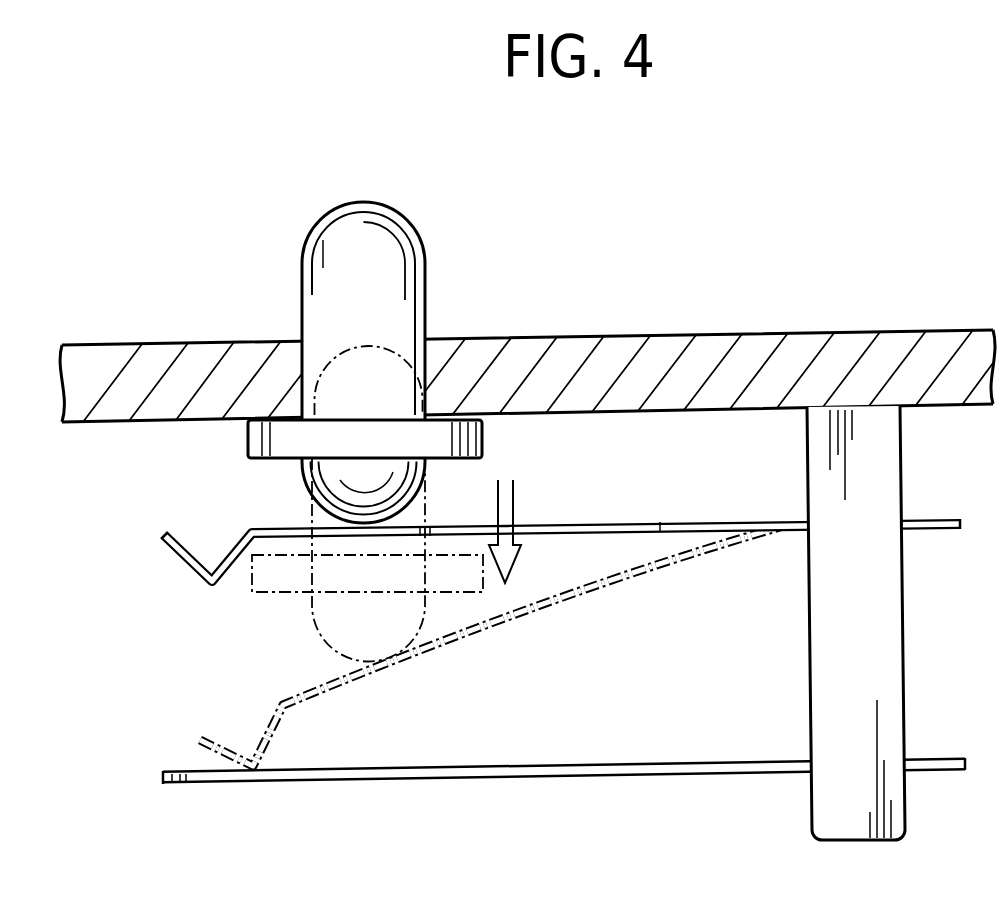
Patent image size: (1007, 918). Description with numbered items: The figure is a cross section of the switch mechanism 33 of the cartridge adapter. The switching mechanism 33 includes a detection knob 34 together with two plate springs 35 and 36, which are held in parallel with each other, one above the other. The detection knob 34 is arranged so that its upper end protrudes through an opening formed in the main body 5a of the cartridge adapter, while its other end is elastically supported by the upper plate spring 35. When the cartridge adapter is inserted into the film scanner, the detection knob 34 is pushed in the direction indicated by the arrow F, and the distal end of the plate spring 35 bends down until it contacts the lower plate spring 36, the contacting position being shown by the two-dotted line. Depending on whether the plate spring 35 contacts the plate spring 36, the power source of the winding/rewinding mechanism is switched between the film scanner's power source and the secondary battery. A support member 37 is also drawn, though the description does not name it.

The switch mechanism 33 is at (723, 242).
The detection knob 34 is at (398, 237).
The main body 5a is at (860, 343).
The plate spring 35 is at (686, 520).
The plate spring 36 is at (657, 762).
The support column 37 is at (887, 632).